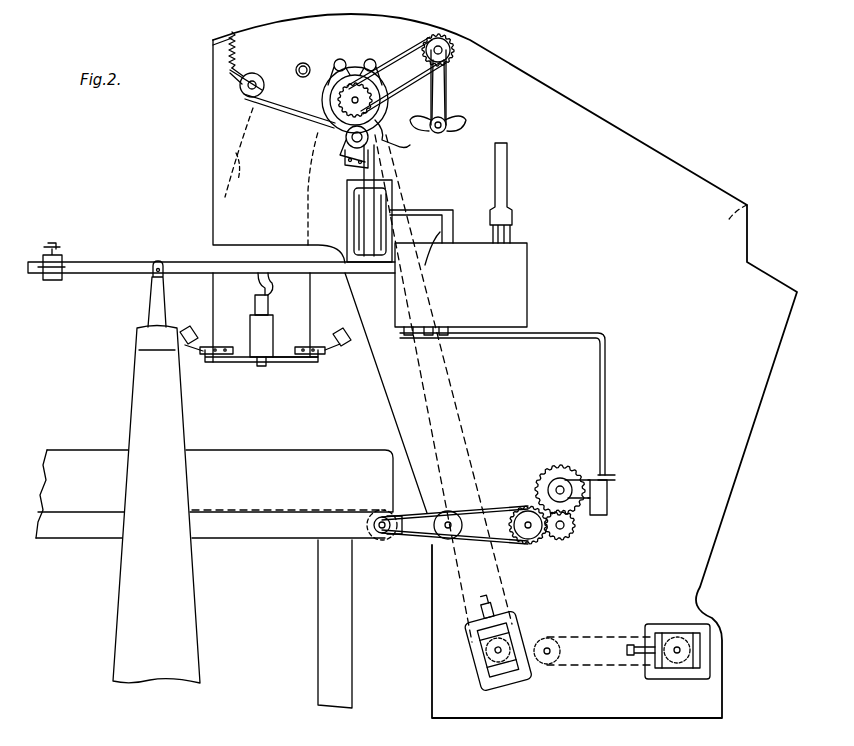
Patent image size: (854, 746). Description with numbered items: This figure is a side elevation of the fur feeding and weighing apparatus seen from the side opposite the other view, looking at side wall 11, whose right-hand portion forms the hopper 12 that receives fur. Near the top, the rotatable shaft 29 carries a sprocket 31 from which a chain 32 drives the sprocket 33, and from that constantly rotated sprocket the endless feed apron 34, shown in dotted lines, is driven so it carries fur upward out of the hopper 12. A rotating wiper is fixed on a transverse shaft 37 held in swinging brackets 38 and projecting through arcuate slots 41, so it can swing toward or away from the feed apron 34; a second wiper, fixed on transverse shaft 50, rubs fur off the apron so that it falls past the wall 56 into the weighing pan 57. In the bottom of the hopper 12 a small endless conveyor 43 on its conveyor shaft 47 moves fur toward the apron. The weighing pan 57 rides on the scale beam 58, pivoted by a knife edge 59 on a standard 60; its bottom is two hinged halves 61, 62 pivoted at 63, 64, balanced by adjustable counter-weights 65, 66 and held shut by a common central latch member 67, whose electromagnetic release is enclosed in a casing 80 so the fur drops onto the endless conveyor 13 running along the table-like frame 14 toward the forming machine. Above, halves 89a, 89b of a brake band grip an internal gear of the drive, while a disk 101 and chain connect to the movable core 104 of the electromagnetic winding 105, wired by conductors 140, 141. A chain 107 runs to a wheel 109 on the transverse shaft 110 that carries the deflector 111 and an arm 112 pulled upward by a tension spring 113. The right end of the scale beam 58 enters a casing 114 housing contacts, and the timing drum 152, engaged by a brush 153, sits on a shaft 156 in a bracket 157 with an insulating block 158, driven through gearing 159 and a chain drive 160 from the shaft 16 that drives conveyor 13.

The side wall 11 is at (690, 142).
The hopper 12 is at (734, 195).
The endless conveyor 13 is at (305, 505).
The table-like frame 14 is at (252, 540).
The shaft 16 is at (384, 535).
The rotatable shaft 29 is at (449, 42).
The sprocket 31 is at (455, 62).
The chain 32 is at (420, 90).
The sprocket 33 is at (352, 90).
The feed apron 34 is at (455, 420).
The transverse shaft 37 is at (440, 134).
The swinging brackets 38 is at (440, 110).
The arcuate slots 41 is at (462, 128).
The small endless conveyor 43 is at (596, 634).
The conveyor shaft 47 is at (548, 656).
The transverse shaft 50 is at (305, 63).
The wall 56 is at (303, 198).
The weighing pan 57 is at (281, 286).
The scale beam 58 is at (182, 262).
The knife edge 59 is at (152, 272).
The standard 60 is at (136, 390).
The hinged bottom half 61 is at (235, 365).
The hinged bottom half 62 is at (298, 366).
The pivot 63 is at (204, 360).
The pivot 64 is at (318, 362).
The adjustable counter-weight 65 is at (342, 346).
The adjustable counter-weight 66 is at (188, 330).
The central latch member 67 is at (262, 368).
The casing 80 is at (262, 330).
The brake band half 89a is at (322, 100).
The brake band half 89b is at (396, 135).
The disk 101 is at (346, 130).
The movable core 104 is at (376, 165).
The electromagnetic winding 105 is at (392, 196).
The chain 107 is at (288, 112).
The wheel 109 is at (258, 74).
The transverse shaft 110 is at (243, 95).
The deflector 111 is at (241, 152).
The arm 112 is at (248, 80).
The tension spring 113 is at (213, 45).
The casing 114 is at (515, 280).
The conductor 140 is at (452, 210).
The conductor 141 is at (427, 249).
The timing drum 152 is at (552, 472).
The brush 153 is at (565, 475).
The shaft 156 is at (552, 482).
The bracket 157 is at (608, 503).
The insulating block 158 is at (612, 477).
The gearing 159 is at (572, 533).
The chain drive 160 is at (508, 542).